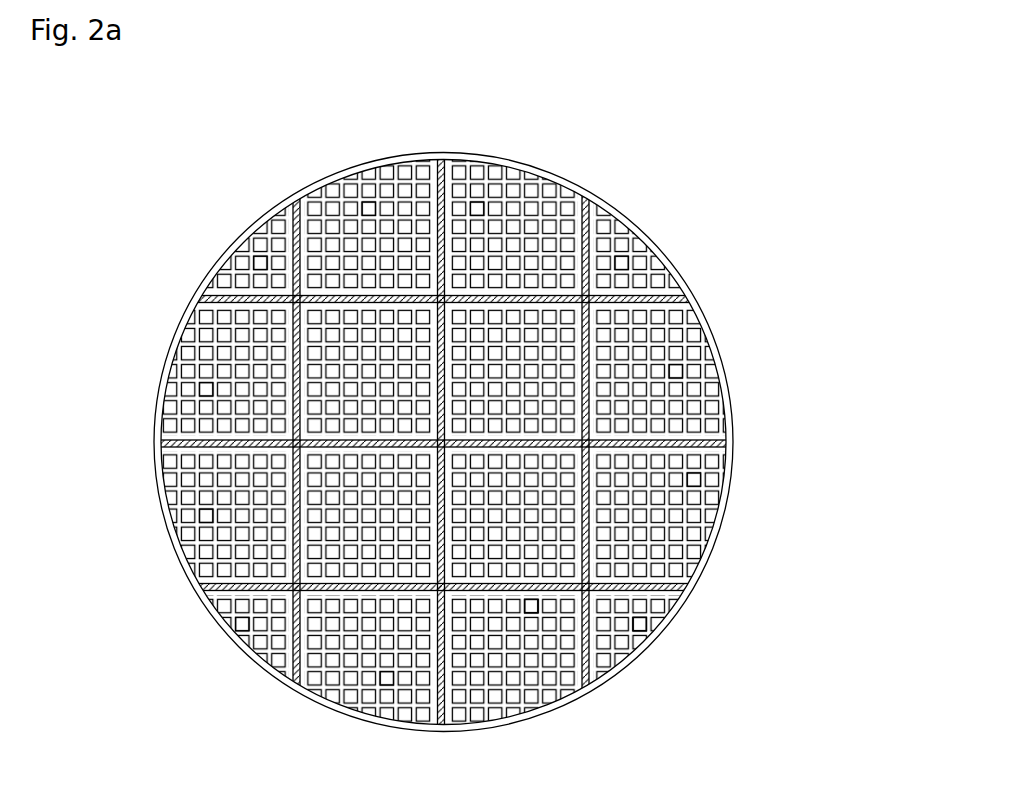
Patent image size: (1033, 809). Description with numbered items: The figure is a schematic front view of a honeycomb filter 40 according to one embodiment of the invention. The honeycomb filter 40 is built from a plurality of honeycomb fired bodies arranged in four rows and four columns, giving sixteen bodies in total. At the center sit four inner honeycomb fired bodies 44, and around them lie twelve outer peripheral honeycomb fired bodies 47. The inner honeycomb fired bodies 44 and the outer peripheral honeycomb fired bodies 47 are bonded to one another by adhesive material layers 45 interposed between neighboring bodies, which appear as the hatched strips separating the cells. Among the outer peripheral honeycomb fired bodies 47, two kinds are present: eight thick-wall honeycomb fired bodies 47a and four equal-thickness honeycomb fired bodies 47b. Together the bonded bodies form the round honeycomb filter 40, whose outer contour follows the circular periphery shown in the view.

The honeycomb filter 40 is at (658, 172).
The inner honeycomb fired body 44 is at (387, 558).
The adhesive material layer 45 is at (299, 684).
The outer peripheral honeycomb fired body 47 is at (806, 541).
The thick-wall honeycomb fired body 47a is at (375, 208).
The equal-thickness honeycomb fired body 47b is at (255, 270).